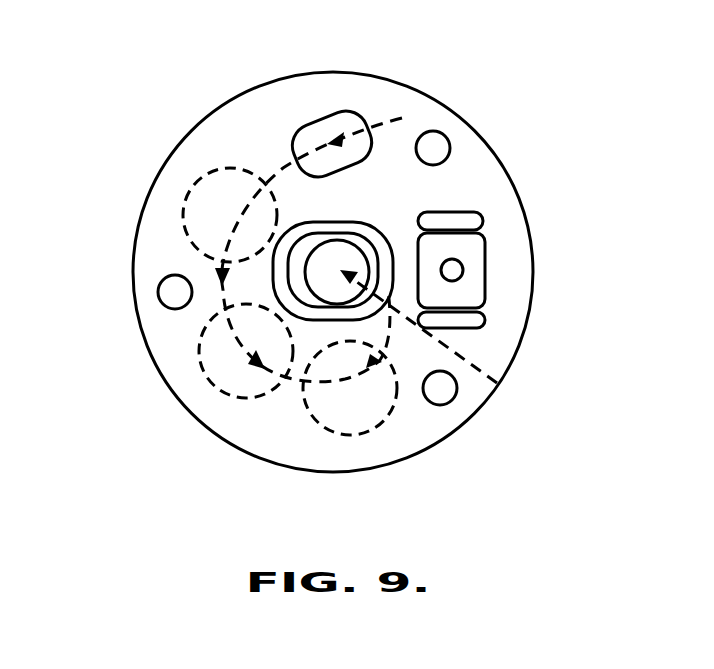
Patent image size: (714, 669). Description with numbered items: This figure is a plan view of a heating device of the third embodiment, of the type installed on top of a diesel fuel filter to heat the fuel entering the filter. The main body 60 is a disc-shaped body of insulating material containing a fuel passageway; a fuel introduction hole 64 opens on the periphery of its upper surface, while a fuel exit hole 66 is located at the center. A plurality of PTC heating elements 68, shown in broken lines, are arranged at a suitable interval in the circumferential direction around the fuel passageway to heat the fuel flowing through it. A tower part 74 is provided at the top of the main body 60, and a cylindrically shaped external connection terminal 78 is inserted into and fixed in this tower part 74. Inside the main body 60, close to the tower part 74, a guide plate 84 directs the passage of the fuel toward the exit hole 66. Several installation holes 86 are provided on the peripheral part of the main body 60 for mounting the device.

The main body 60 is at (512, 180).
The fuel introduction hole 64 is at (322, 128).
The fuel exit hole 66 is at (333, 240).
The PTC heating elements 68 is at (188, 195).
The tower part 74 is at (485, 241).
The external connection terminal 78 is at (463, 270).
The guide plate 84 is at (458, 355).
The installation holes 86 is at (170, 297).